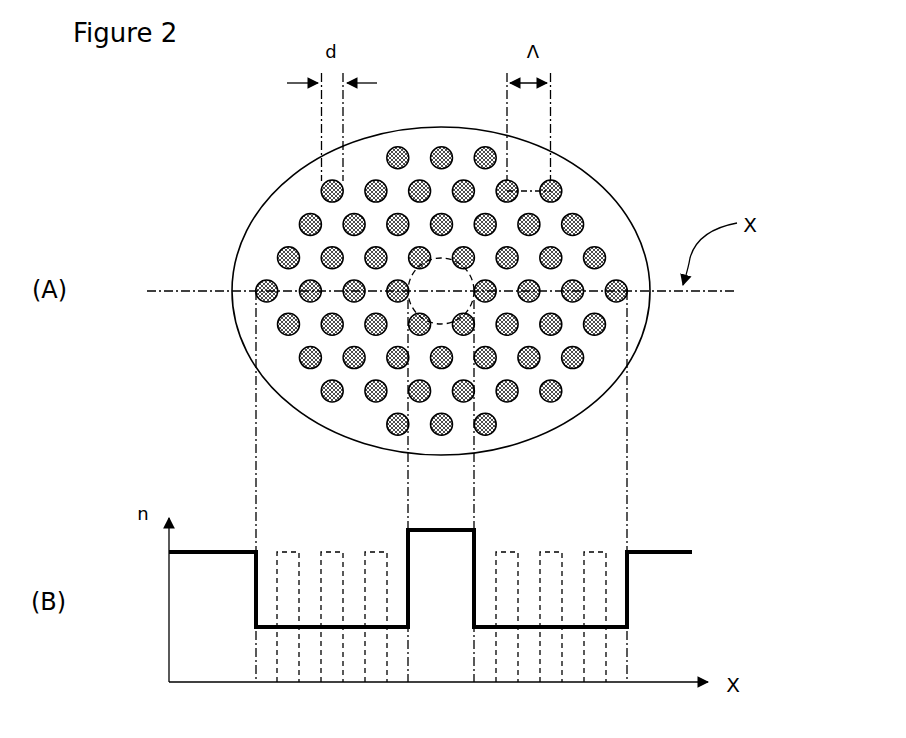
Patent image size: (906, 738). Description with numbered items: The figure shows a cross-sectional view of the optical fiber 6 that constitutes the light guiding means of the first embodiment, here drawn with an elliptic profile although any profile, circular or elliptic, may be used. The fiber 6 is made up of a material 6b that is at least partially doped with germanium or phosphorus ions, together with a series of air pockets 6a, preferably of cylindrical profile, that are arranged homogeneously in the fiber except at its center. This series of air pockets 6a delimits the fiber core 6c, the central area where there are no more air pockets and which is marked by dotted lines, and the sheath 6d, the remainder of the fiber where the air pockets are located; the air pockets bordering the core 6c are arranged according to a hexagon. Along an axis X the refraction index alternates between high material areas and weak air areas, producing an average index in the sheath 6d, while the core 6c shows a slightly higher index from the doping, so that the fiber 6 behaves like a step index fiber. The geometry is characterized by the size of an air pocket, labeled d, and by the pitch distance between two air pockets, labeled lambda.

The optical fiber 6 is at (632, 169).
The air pockets 6a is at (310, 225).
The material 6b is at (257, 257).
The fiber core 6c is at (436, 292).
The sheath 6d is at (273, 350).